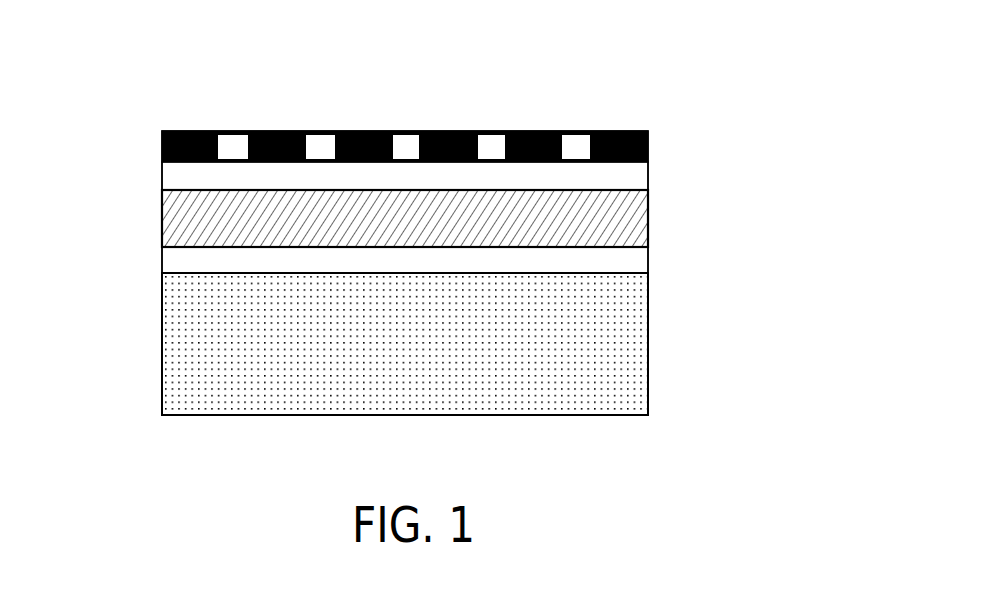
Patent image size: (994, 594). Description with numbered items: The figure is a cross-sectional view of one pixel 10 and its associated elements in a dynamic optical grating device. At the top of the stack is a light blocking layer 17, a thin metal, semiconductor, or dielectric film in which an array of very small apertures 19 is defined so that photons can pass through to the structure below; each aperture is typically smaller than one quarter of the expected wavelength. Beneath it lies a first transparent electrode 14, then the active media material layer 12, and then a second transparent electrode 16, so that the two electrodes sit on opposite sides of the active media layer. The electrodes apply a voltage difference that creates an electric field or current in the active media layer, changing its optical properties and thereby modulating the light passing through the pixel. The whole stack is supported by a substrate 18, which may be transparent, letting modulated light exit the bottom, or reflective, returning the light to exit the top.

The pixel 10 is at (432, 212).
The active media material layer 12 is at (342, 200).
The first transparent electrode 14 is at (466, 150).
The second transparent electrode 16 is at (467, 226).
The light blocking layer 17 is at (349, 109).
The substrate 18 is at (338, 344).
The apertures 19 is at (404, 109).